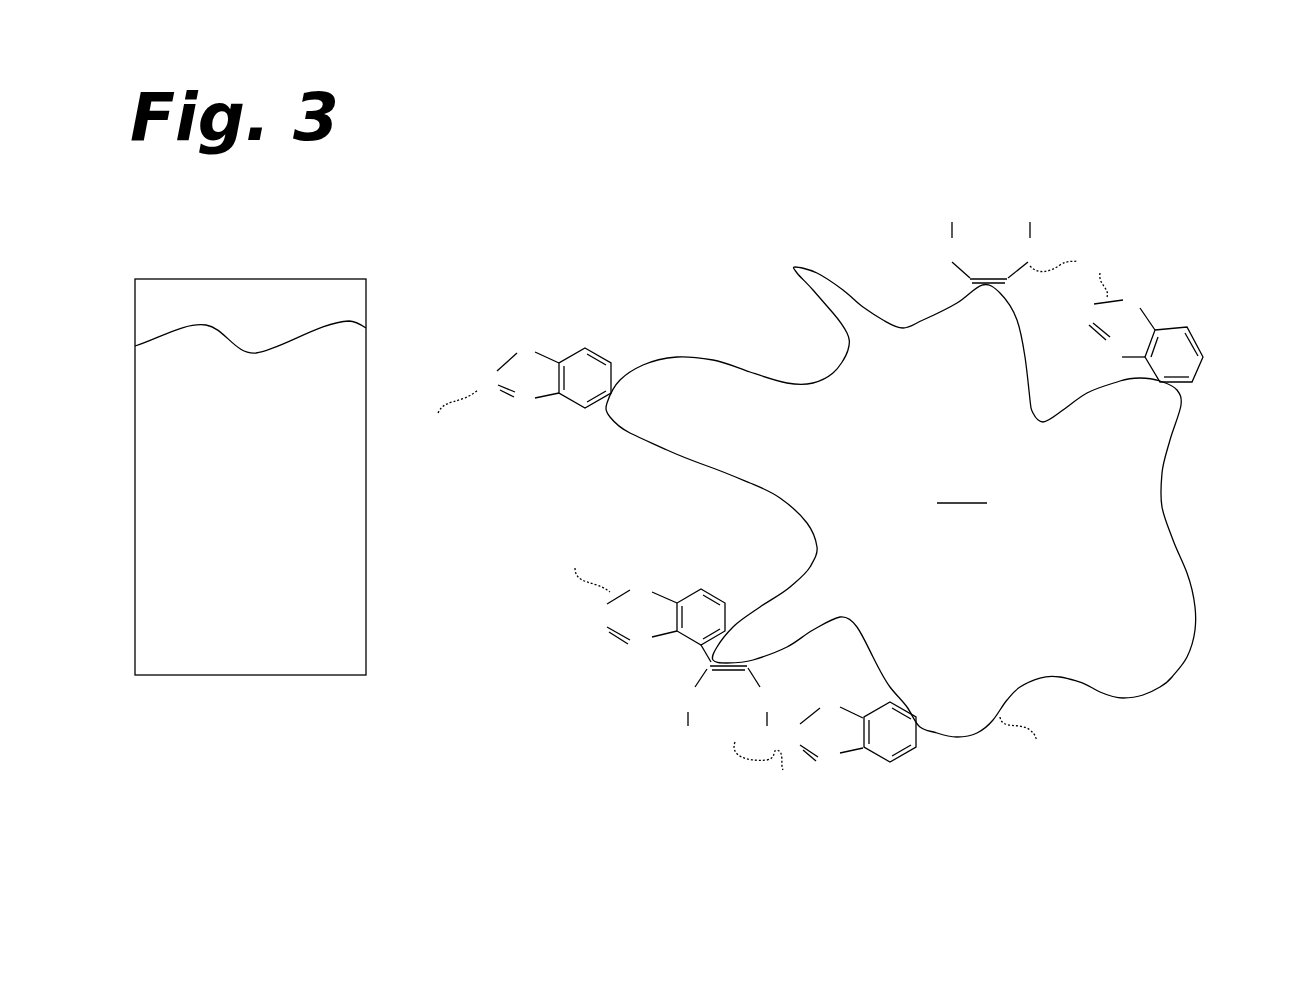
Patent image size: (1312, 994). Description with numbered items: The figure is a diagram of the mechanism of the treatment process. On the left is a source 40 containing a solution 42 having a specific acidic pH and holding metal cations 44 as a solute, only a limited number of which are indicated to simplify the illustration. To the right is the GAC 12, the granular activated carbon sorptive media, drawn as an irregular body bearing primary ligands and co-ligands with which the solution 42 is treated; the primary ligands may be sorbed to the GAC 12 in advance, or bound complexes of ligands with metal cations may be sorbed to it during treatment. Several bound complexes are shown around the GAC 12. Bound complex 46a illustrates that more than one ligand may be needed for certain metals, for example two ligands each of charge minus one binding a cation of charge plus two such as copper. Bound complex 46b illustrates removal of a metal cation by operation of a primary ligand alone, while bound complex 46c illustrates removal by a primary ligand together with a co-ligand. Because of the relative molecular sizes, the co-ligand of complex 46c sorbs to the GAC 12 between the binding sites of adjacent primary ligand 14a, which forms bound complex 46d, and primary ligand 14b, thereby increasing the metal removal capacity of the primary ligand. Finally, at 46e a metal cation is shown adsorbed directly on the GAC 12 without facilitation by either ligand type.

The GAC 12 is at (1187, 580).
The primary ligand 14a is at (663, 592).
The primary ligand 14b is at (1200, 340).
The source 40 is at (325, 278).
The solution 42 is at (366, 392).
The metal cations 44 is at (255, 530).
The bound complex 46a is at (1134, 209).
The bound complex 46b is at (560, 302).
The bound complex 46c is at (691, 782).
The bound complex 46d is at (546, 581).
The metal cation binding directly to the GAC 46e is at (1051, 794).